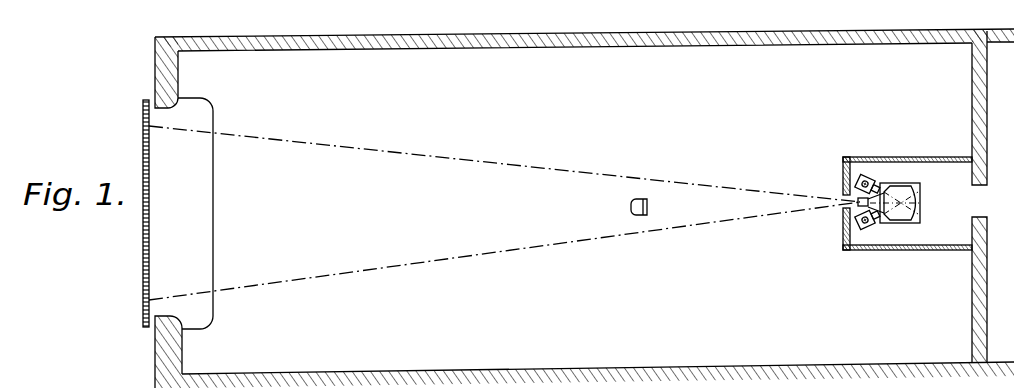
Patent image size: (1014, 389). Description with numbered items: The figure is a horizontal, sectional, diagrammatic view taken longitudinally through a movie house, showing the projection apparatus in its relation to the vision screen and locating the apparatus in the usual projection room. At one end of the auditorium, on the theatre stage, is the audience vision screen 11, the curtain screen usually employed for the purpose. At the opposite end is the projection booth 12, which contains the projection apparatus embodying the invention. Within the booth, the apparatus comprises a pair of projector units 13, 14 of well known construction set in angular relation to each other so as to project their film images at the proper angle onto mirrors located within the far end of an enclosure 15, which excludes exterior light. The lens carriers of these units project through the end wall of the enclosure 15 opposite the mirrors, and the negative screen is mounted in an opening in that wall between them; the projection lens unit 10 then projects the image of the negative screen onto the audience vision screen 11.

The projection lens unit 10 is at (857, 208).
The audience vision screen 11 is at (149, 237).
The projection booth 12 is at (901, 250).
The projector unit 13 is at (857, 180).
The projector unit 14 is at (856, 226).
The enclosure 15 is at (898, 184).